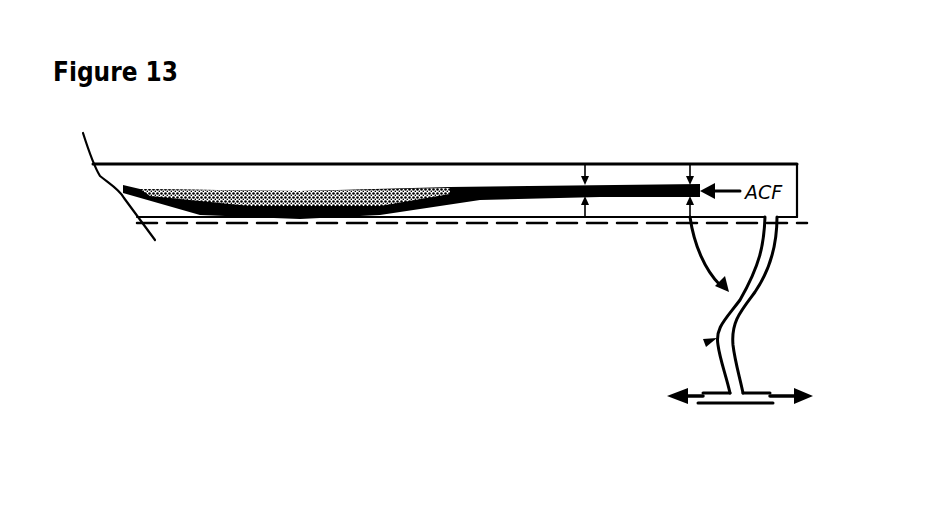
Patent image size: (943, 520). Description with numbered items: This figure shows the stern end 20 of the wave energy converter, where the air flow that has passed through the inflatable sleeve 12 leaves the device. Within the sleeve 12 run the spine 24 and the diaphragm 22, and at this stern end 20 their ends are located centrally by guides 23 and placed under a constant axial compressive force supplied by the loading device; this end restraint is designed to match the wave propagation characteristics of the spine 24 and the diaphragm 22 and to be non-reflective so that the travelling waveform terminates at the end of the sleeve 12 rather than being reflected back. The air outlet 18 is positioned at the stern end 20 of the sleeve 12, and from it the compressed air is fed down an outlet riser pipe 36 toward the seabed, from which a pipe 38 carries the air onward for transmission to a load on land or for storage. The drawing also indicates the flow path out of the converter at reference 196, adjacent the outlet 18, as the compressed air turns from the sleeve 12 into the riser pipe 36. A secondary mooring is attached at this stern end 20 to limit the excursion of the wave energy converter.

The inflatable sleeve 12 is at (345, 164).
The air outlet 18 is at (753, 297).
The stern end 20 is at (695, 162).
The diaphragm 22 is at (272, 222).
The guides 23 is at (585, 164).
The spine 24 is at (346, 223).
The outlet riser pipe 36 is at (705, 342).
The pipe 38 is at (712, 405).
The bending direction 196 is at (726, 254).